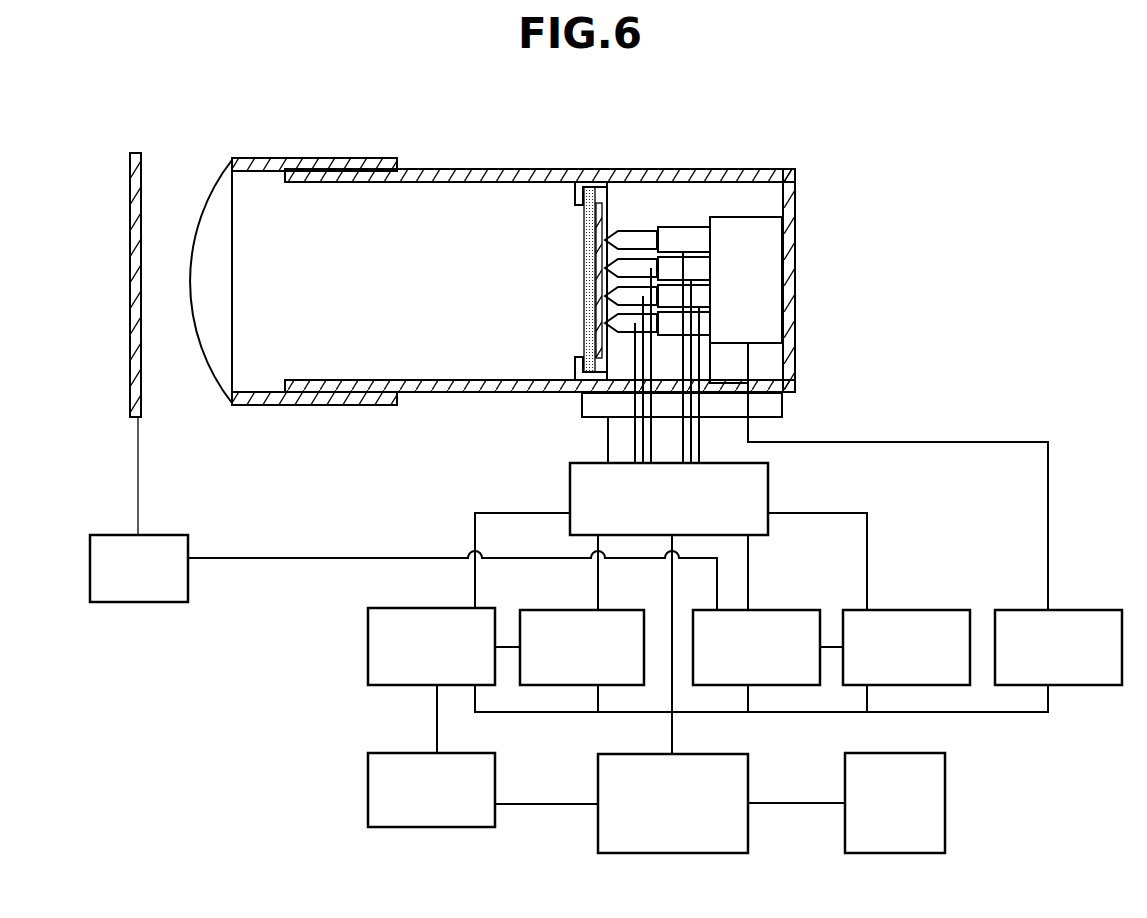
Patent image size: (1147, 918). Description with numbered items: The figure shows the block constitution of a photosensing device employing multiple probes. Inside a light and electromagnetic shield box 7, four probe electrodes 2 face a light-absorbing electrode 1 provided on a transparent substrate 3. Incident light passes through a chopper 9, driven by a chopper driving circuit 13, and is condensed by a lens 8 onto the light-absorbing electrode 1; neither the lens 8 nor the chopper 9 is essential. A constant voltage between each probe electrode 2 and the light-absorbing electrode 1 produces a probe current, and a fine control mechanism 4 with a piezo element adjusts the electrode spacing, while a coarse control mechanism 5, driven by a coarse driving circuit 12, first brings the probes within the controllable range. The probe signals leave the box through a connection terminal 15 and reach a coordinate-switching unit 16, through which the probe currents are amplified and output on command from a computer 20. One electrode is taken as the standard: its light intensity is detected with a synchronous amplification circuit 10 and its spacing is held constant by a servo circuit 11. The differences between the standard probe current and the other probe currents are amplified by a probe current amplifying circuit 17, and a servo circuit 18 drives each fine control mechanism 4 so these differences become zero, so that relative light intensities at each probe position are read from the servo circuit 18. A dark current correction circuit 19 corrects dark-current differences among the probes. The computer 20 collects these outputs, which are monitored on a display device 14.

The light-absorbing electrode 1 is at (597, 198).
The probe electrode 2 is at (633, 235).
The transparent substrate 3 is at (585, 225).
The fine control mechanism 4 is at (675, 232).
The coarse control mechanism 5 is at (760, 303).
The light and electromagnetic shield box 7 is at (797, 203).
The lens 8 is at (212, 227).
The chopper 9 is at (135, 395).
The synchronous amplification circuit 10 is at (770, 617).
The servo circuit 11 is at (902, 617).
The coarse driving circuit 12 is at (1068, 615).
The chopper driving circuit 13 is at (148, 590).
The display device 14 is at (937, 797).
The connection terminal 15 is at (773, 407).
The coordinate-switching unit 16 is at (585, 487).
The probe current amplifying circuit 17 is at (543, 620).
The servo circuit 18 is at (373, 630).
The dark current correction circuit 19 is at (370, 800).
The computer 20 is at (607, 830).